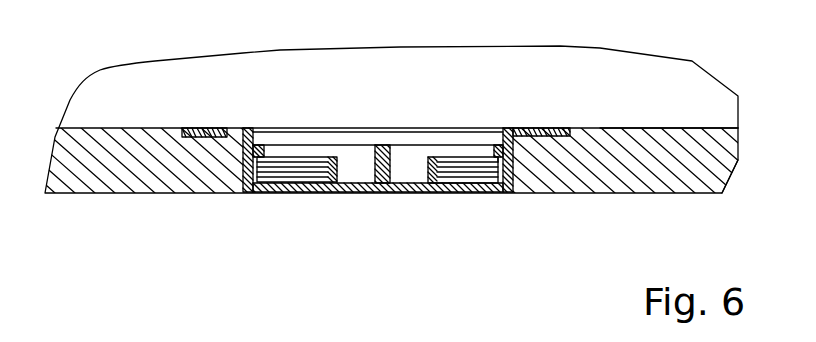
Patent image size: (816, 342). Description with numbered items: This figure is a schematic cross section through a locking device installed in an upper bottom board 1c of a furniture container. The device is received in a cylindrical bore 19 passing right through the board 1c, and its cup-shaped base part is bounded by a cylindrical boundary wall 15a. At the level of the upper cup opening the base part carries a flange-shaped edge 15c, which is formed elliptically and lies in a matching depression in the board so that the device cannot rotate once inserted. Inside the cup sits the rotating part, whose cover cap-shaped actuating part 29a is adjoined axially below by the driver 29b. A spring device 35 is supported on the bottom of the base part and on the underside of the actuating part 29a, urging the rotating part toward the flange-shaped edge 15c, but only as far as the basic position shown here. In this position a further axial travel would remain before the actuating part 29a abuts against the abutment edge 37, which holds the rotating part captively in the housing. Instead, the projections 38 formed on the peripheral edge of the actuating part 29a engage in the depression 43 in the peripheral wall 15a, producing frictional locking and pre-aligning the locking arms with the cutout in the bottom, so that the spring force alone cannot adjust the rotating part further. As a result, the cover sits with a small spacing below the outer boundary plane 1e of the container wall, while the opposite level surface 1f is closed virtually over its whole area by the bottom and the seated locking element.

The upper bottom board 1c is at (681, 172).
The outer boundary plane 1e is at (707, 126).
The opposite level surface 1f is at (703, 194).
The flange-shaped edge 15c is at (199, 127).
The cylindrical boundary wall 15a is at (513, 168).
The cylindrical bore 19 is at (243, 183).
The cover cap-shaped actuating part 29a is at (300, 160).
The driver 29b is at (383, 167).
The spring device 35 is at (275, 172).
The abutment edge 37 is at (500, 150).
The projections 38 is at (503, 128).
The depression 43 is at (508, 156).